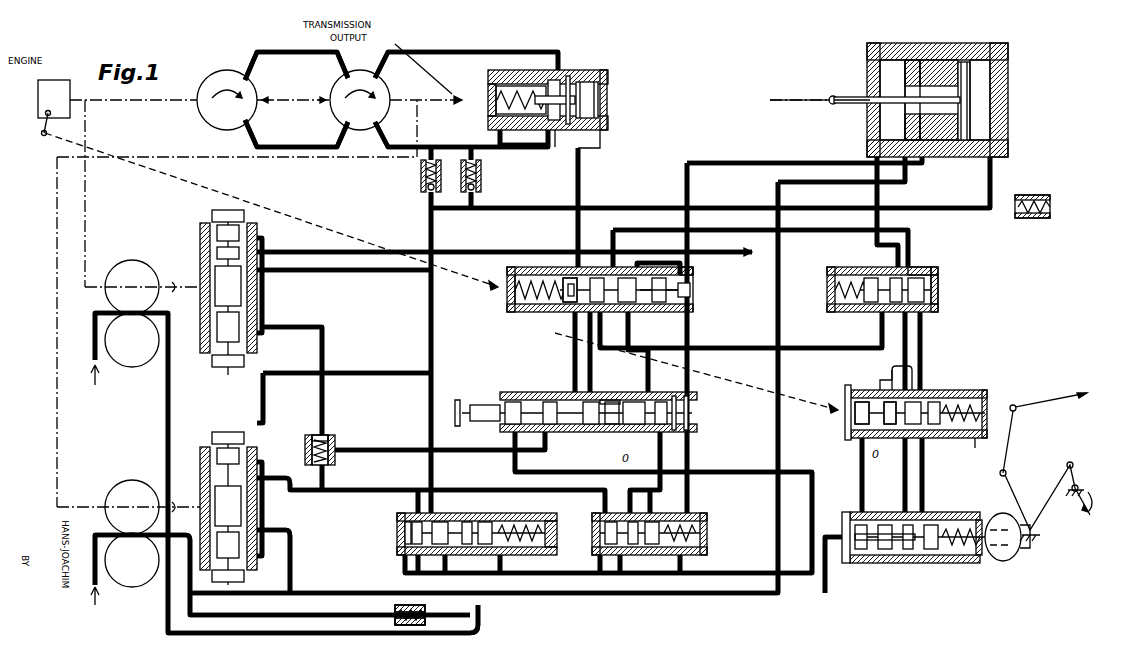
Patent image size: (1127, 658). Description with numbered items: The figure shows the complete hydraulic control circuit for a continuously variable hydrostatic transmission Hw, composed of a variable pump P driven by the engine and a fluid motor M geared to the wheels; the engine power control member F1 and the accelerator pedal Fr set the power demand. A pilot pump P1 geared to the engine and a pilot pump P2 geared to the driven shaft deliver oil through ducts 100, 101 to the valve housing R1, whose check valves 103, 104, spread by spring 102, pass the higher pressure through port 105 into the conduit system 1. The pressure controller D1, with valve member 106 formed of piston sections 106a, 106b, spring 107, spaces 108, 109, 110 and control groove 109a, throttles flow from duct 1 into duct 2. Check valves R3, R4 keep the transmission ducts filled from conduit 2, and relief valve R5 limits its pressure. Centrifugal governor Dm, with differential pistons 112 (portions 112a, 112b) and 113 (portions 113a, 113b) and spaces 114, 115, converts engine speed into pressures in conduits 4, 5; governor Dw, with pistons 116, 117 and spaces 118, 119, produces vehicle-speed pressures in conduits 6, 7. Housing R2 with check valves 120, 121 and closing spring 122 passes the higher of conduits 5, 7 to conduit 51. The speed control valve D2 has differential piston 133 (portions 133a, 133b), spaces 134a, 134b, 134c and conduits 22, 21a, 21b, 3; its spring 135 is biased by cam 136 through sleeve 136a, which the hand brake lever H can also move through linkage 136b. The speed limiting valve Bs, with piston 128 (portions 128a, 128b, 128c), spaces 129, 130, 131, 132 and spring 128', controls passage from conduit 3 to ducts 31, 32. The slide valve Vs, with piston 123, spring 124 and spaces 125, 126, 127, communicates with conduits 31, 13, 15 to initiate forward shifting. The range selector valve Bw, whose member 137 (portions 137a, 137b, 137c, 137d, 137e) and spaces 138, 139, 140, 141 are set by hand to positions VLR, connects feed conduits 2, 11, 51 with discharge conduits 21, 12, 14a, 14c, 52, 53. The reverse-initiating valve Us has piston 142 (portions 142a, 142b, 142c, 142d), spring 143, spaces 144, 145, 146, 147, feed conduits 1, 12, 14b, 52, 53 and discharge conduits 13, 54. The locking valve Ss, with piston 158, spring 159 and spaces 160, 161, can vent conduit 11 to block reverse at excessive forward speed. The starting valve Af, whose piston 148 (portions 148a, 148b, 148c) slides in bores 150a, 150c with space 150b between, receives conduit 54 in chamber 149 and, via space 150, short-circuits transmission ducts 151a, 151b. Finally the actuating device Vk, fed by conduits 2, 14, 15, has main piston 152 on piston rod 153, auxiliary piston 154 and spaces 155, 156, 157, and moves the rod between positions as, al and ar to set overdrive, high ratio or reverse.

The power control member F1 is at (45, 136).
The pump P is at (204, 113).
The fluid motor M is at (383, 112).
The hydrostatic transmission Hw is at (295, 102).
The pilot pump P1 is at (112, 264).
The pilot pump P2 is at (112, 484).
The centrifugal governor Dm is at (237, 222).
The centrifugal governor Dw is at (202, 437).
The differential piston 112 is at (222, 212).
The piston portion 112a is at (210, 225).
The piston portion 112b is at (210, 252).
The differential piston 113 is at (222, 368).
The piston portion 113a is at (246, 344).
The piston portion 113b is at (258, 295).
The pressure space 114 is at (282, 259).
The pressure space 115 is at (264, 318).
The differential piston 116 is at (240, 430).
The differential piston 117 is at (226, 580).
The pressure space 118 is at (252, 480).
The pressure space 119 is at (244, 560).
The check valve 120 is at (312, 434).
The check valve 121 is at (300, 486).
The closing spring 122 is at (252, 448).
The duct 100 is at (165, 400).
The duct 101 is at (188, 586).
The spring 102 is at (422, 626).
The check valve 103 is at (418, 606).
The check valve 104 is at (396, 622).
The port 105 is at (404, 575).
The valve member 106 is at (452, 520).
The piston section 106a is at (460, 548).
The piston section 106b is at (500, 548).
The spring 107 is at (530, 520).
The pressure space 108 is at (398, 548).
The pressure space 109 is at (418, 520).
The control groove 109a is at (428, 548).
The space 110 is at (486, 520).
The valve housing R1 is at (394, 612).
The valve housing R2 is at (336, 434).
The check valve R3 is at (420, 176).
The check valve R4 is at (482, 176).
The relief valve R5 is at (1036, 222).
The starting slide valve Af is at (618, 110).
The piston member 148 is at (560, 70).
The piston portion 148a is at (500, 96).
The piston portion 148b is at (572, 80).
The piston portion 148c is at (527, 70).
The chamber 149 is at (604, 80).
The control space 150 is at (568, 118).
The bore 150a is at (598, 126).
The space 150b is at (566, 126).
The bore 150c is at (546, 120).
The duct 151a is at (452, 50).
The duct 151b is at (452, 144).
The conduit 54 is at (582, 190).
The slide valve Us is at (498, 290).
The piston 142 is at (566, 266).
The piston portion 142a is at (568, 310).
The piston portion 142b is at (570, 318).
The piston portion 142c is at (632, 310).
The piston portion 142d is at (695, 270).
The spring 143 is at (522, 266).
The pressure space 144 is at (690, 298).
The pressure space 145 is at (665, 304).
The pressure space 146 is at (640, 262).
The pressure space 147 is at (590, 266).
The conduit system 1 is at (606, 314).
The duct 2 is at (262, 240).
The duct 3 is at (924, 466).
The conduit 4 is at (330, 250).
The conduit 5 is at (322, 320).
The conduit 6 is at (292, 533).
The conduit 7 is at (275, 475).
The conduit 11 is at (660, 482).
The conduit 12 is at (632, 360).
The conduit 13 is at (660, 230).
The conduit 14 is at (926, 166).
The conduit 14a is at (780, 220).
The conduit 14b is at (684, 192).
The conduit 14c is at (690, 496).
The conduit 15 is at (880, 214).
The conduit 21 is at (515, 432).
The conduit 21a is at (906, 494).
The conduit 21b is at (860, 496).
The conduit 22 is at (860, 490).
The duct 31 is at (922, 342).
The duct 32 is at (880, 385).
The conduit 51 is at (400, 449).
The conduit 52 is at (590, 372).
The conduit 53 is at (578, 362).
The actuating device Vk is at (1008, 67).
The main piston 152 is at (972, 86).
The piston rod 153 is at (836, 104).
The auxiliary piston 154 is at (920, 44).
The pressure space 155 is at (880, 44).
The pressure space 156 is at (952, 44).
The pressure space 157 is at (990, 110).
The extreme position as is at (790, 95).
The intermediate position al is at (822, 96).
The extreme position ar is at (850, 96).
The slide valve Vs is at (942, 285).
The piston 123 is at (930, 308).
The spring 124 is at (862, 312).
The pressure space 125 is at (832, 275).
The pressure space 126 is at (900, 312).
The pressure space 127 is at (916, 266).
The pressure space 131 is at (892, 375).
The speed limiting valve Bs is at (963, 383).
The valve piston 128 is at (868, 422).
The piston portion 128a is at (845, 415).
The piston portion 128b is at (890, 428).
The piston portion 128c is at (932, 396).
The spring 128' is at (991, 449).
The pressure space 129 is at (842, 400).
The pressure space 130 is at (870, 398).
The pressure space 132 is at (990, 400).
The brake hand lever H is at (1043, 427).
The accelerator pedal Fr is at (1049, 501).
The range selector slide valve Bw is at (699, 411).
The valve positions VLR is at (478, 398).
The valve member 137 is at (545, 400).
The piston portion 137a is at (680, 430).
The piston portion 137b is at (636, 432).
The piston portion 137c is at (602, 400).
The piston portion 137d is at (566, 426).
The piston portion 137e is at (490, 428).
The pressure space 138 is at (690, 408).
The pressure space 139 is at (645, 400).
The pressure space 140 is at (612, 430).
The pressure space 141 is at (516, 400).
The pressure controller D1 is at (391, 528).
The locking valve Ss is at (713, 550).
The piston 158 is at (600, 550).
The spring 159 is at (672, 556).
The pressure space 160 is at (652, 520).
The pressure space 161 is at (612, 556).
The speed control valve D2 is at (925, 549).
The differential piston 133 is at (900, 560).
The piston portion 133a is at (884, 556).
The piston portion 133b is at (928, 556).
The pressure space 134a is at (842, 540).
The pressure space 134b is at (860, 556).
The pressure space 134c is at (912, 522).
The spring 135 is at (960, 560).
The cam 136 is at (1000, 556).
The sleeve 136a is at (988, 560).
The linkage 136b is at (1036, 538).